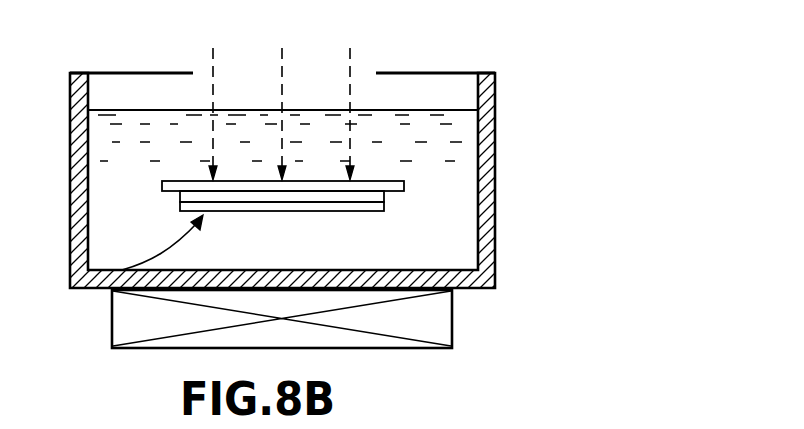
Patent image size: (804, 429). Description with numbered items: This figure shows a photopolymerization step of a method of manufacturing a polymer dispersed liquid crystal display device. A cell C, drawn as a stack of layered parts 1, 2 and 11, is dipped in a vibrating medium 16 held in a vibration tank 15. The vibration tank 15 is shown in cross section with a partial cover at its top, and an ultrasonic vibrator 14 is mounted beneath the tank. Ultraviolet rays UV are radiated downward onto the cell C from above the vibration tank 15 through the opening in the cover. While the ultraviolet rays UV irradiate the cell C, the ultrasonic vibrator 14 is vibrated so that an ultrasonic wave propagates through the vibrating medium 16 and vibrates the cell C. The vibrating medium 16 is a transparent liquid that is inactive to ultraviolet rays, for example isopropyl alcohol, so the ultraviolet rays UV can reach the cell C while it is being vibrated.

The substrate / glass plate 1 is at (172, 180).
The coating film 2 is at (330, 214).
The liquid crystal element / substrate 11 is at (374, 197).
The ultrasonic vibrator 14 is at (438, 320).
The vibration tank 15 is at (487, 172).
The vibrating medium 16 is at (460, 137).
The ultraviolet rays UV is at (350, 58).
The cell C is at (105, 290).